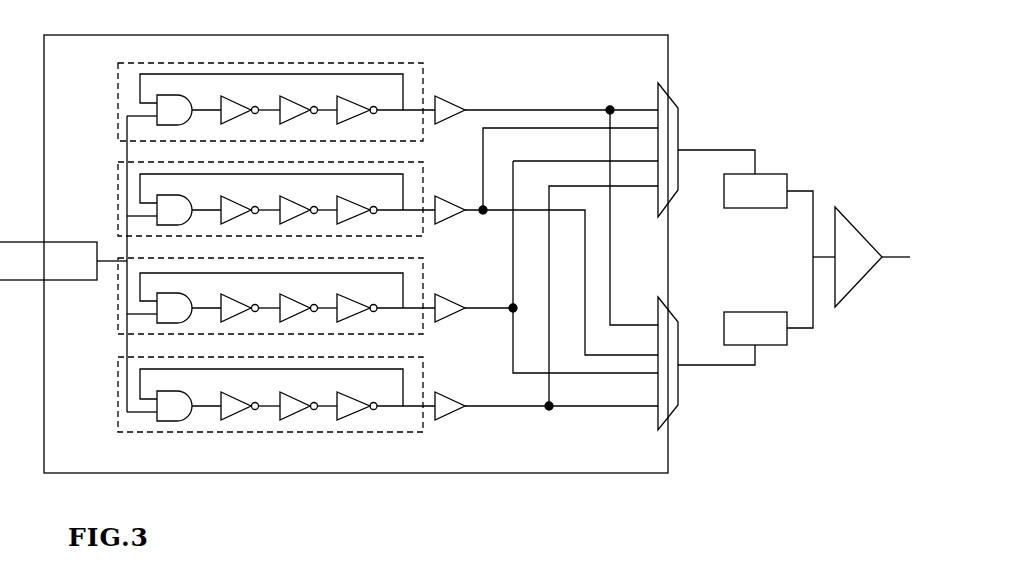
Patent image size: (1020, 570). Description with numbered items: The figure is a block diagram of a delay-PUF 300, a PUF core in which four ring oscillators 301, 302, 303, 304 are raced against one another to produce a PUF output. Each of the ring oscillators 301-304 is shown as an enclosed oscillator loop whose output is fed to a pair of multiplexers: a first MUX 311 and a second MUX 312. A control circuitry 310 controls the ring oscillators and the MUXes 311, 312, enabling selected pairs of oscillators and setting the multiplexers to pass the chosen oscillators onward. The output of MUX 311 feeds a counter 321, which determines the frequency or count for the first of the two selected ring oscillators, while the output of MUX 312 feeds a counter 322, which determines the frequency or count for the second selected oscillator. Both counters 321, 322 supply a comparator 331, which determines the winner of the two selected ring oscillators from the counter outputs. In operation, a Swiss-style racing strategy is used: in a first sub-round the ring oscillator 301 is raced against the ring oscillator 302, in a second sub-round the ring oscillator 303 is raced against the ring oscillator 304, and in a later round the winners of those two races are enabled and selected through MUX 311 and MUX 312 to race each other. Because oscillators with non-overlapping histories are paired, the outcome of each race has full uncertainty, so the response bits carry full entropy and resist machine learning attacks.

The delay-PUF 300 is at (841, 69).
The ring oscillator 301 is at (413, 82).
The ring oscillator 302 is at (413, 180).
The ring oscillator 303 is at (413, 277).
The ring oscillator 304 is at (413, 375).
The control circuitry 310 is at (63, 264).
The MUX 311 is at (672, 127).
The MUX 312 is at (672, 313).
The counter 321 is at (768, 215).
The counter 322 is at (768, 301).
The comparator 331 is at (845, 235).